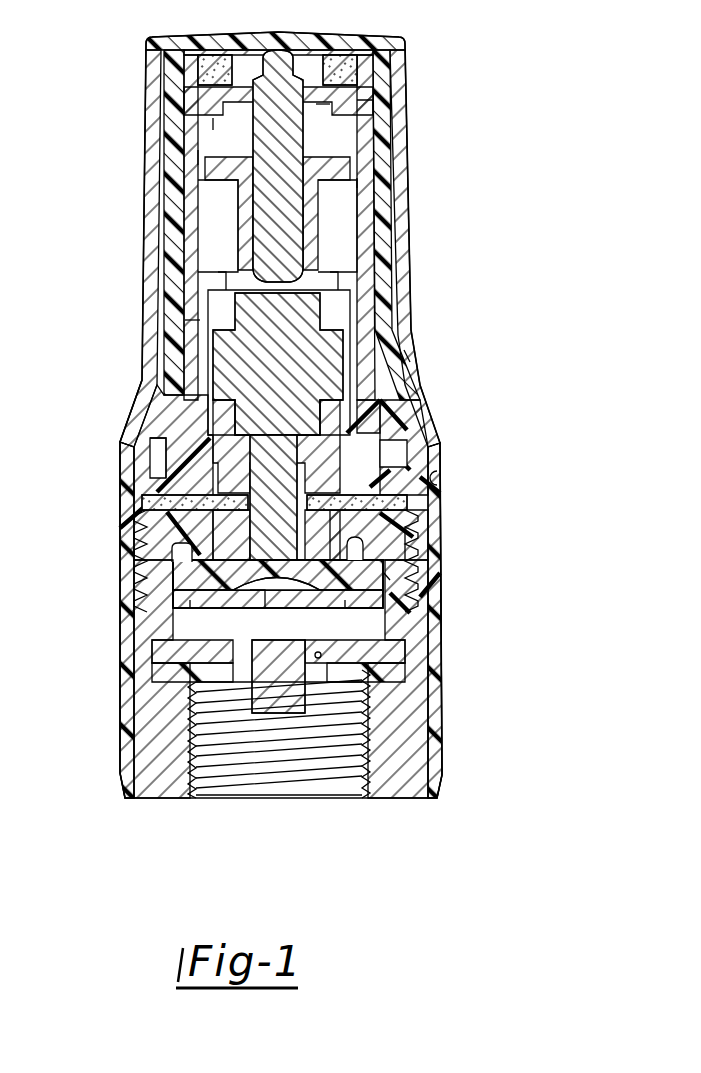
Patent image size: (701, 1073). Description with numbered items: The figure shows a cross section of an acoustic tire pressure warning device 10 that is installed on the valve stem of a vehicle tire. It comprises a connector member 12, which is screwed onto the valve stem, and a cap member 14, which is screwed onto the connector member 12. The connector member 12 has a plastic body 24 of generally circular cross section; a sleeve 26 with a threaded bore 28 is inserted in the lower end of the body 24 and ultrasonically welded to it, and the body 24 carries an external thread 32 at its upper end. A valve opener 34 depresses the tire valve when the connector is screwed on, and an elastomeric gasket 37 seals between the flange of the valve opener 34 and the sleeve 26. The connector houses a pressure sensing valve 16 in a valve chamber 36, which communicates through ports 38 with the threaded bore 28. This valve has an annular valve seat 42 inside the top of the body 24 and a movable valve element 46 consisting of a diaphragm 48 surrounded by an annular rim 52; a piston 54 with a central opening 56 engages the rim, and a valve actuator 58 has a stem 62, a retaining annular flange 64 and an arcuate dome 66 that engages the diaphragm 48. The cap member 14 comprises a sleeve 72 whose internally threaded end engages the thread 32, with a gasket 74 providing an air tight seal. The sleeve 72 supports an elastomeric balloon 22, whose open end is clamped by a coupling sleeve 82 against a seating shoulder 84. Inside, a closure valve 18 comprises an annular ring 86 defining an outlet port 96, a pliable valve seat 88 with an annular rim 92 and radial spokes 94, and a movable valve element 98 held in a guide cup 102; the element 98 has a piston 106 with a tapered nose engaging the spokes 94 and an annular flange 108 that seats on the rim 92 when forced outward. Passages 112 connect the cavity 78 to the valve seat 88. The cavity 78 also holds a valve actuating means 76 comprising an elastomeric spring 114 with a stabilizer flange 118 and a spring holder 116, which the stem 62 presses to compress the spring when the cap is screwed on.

The pressure warning device 10 is at (477, 248).
The connector member 12 is at (456, 660).
The cap member 14 is at (470, 503).
The pressure sensing valve 16 is at (364, 584).
The closure valve 18 is at (352, 136).
The elastomeric balloon 22 is at (316, 40).
The plastic body 24 is at (430, 738).
The sleeve 26 is at (408, 780).
The threaded bore 28 is at (212, 777).
The external thread 32 is at (402, 562).
The valve opener 34 is at (247, 712).
The valve chamber 36 is at (237, 642).
The elastomeric gasket 37 is at (167, 663).
The ports 38 is at (327, 664).
The valve seat 42 is at (200, 552).
The movable valve element 46 is at (180, 580).
The diaphragm 48 is at (258, 592).
The annular rim 52 is at (350, 594).
The piston 54 is at (177, 608).
The opening 56 is at (278, 594).
The valve actuator 58 is at (402, 523).
The stem 62 is at (420, 447).
The annular flange 64 is at (386, 578).
The arcuate dome 66 is at (268, 505).
The sleeve 72 is at (186, 316).
The gasket 74 is at (150, 503).
The valve actuating means 76 is at (343, 315).
The cavity 78 is at (113, 400).
The coupling sleeve 82 is at (412, 356).
The seating shoulder 84 is at (437, 478).
The annular ring 86 is at (352, 76).
The valve seat 88 is at (364, 107).
The annular rim 92 is at (214, 123).
The radial spokes 94 is at (316, 106).
The outlet port 96 is at (237, 62).
The movable valve element 98 is at (200, 160).
The guide cup 102 is at (366, 252).
The piston 106 is at (254, 148).
The annular flange 108 is at (360, 182).
The passages 112 is at (222, 272).
The spring 114 is at (322, 412).
The spring holder 116 is at (207, 467).
The stabilizer flange 118 is at (188, 320).